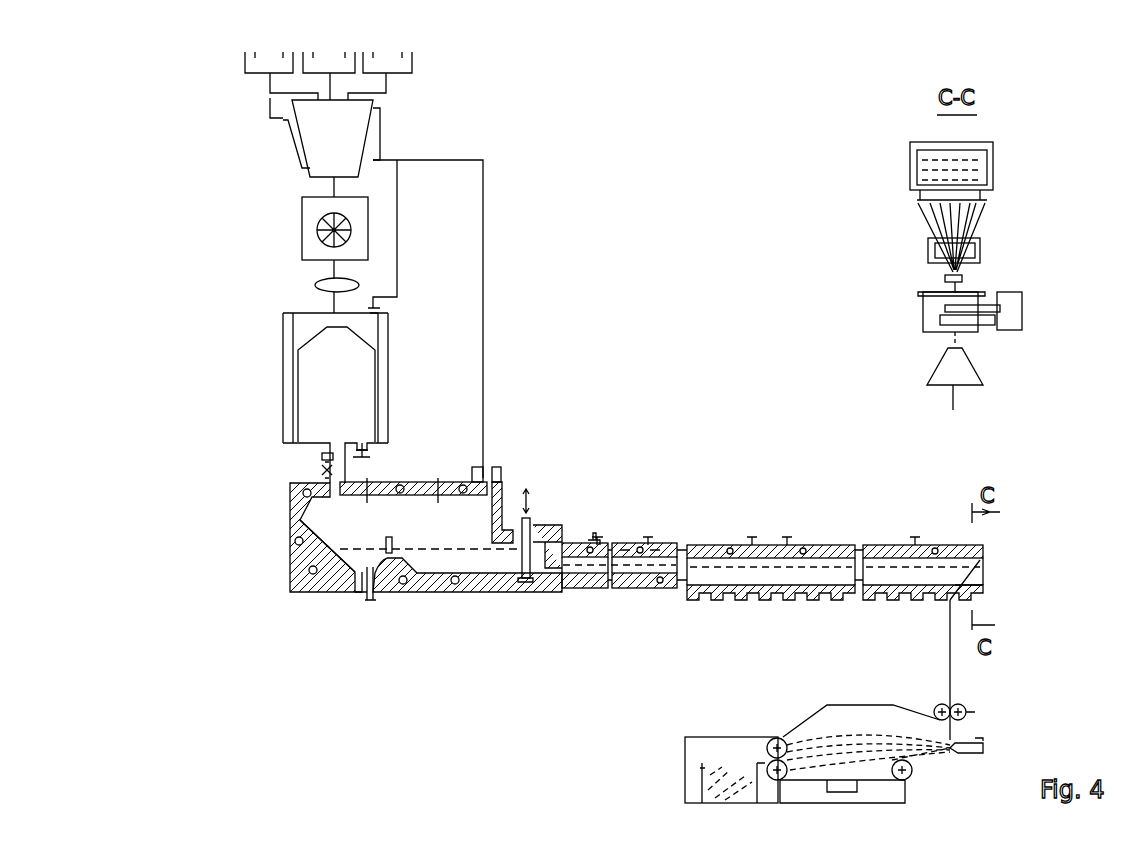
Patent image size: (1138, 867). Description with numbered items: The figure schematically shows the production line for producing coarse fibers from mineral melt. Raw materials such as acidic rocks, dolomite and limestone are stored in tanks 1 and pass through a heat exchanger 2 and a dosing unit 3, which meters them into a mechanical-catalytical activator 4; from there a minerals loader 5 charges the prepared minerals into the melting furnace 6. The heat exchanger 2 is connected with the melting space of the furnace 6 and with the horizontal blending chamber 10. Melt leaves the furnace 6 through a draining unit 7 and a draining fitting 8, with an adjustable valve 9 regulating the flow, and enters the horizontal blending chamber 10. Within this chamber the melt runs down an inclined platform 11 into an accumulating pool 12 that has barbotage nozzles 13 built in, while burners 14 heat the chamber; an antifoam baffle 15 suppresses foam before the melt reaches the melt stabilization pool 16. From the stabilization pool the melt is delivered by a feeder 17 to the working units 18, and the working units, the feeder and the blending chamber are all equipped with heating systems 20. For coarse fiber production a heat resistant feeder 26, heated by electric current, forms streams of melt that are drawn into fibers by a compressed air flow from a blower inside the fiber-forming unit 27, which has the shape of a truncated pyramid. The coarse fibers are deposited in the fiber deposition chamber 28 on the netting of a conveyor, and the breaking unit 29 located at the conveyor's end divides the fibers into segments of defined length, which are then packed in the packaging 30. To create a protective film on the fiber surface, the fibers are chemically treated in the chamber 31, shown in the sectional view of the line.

The tanks 1 is at (328, 85).
The heat exchanger 2 is at (375, 118).
The dosing unit 3 is at (310, 128).
The mechanical-catalytical activator 4 is at (305, 225).
The minerals loader 5 is at (315, 285).
The melting furnace 6 is at (290, 391).
The draining unit 7 is at (322, 456).
The draining fitting 8 is at (370, 447).
The adjustable valve 9 is at (324, 470).
The horizontal blending chamber 10 is at (300, 500).
The inclined platform 11 is at (300, 542).
The accumulating pool 12 is at (342, 589).
The barbotage nozzles 13 is at (367, 600).
The burners 14 is at (440, 490).
The antifoam baffle 15 is at (389, 556).
The melt stabilization pool 16 is at (497, 563).
The feeder 17 is at (560, 592).
The working units 18 is at (953, 598).
The heating systems 20 is at (590, 540).
The heat resistant feeder 26 is at (932, 195).
The fiber-forming unit 27 is at (940, 372).
The fiber deposition chamber 28 is at (885, 710).
The breaking unit 29 is at (783, 737).
The packaging 30 is at (722, 778).
The chamber 31 is at (920, 307).